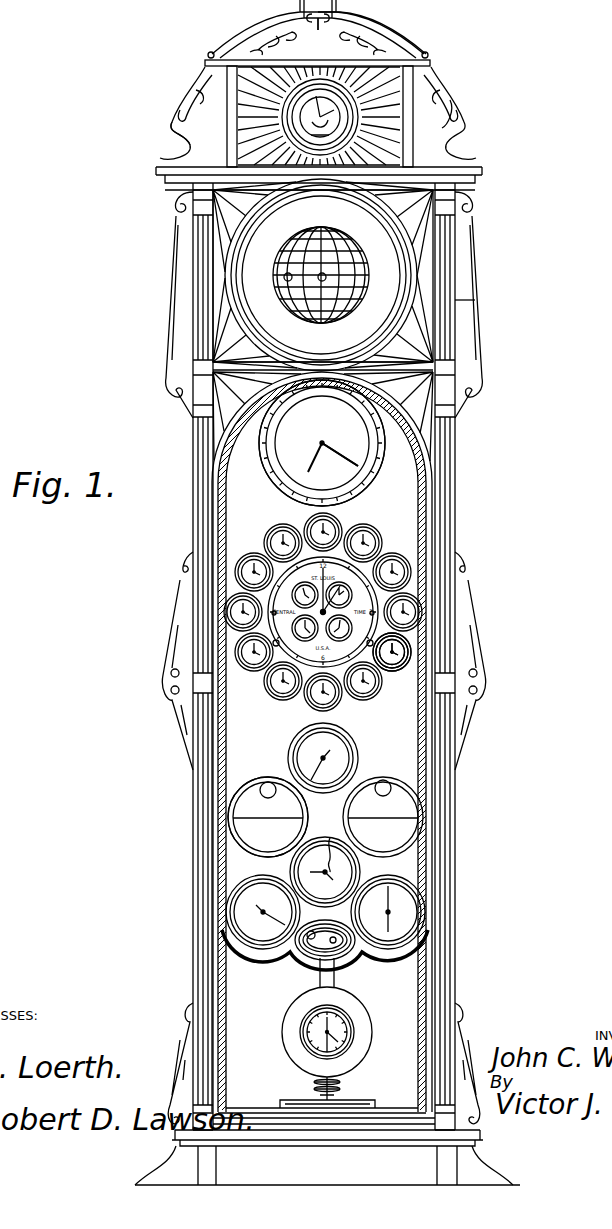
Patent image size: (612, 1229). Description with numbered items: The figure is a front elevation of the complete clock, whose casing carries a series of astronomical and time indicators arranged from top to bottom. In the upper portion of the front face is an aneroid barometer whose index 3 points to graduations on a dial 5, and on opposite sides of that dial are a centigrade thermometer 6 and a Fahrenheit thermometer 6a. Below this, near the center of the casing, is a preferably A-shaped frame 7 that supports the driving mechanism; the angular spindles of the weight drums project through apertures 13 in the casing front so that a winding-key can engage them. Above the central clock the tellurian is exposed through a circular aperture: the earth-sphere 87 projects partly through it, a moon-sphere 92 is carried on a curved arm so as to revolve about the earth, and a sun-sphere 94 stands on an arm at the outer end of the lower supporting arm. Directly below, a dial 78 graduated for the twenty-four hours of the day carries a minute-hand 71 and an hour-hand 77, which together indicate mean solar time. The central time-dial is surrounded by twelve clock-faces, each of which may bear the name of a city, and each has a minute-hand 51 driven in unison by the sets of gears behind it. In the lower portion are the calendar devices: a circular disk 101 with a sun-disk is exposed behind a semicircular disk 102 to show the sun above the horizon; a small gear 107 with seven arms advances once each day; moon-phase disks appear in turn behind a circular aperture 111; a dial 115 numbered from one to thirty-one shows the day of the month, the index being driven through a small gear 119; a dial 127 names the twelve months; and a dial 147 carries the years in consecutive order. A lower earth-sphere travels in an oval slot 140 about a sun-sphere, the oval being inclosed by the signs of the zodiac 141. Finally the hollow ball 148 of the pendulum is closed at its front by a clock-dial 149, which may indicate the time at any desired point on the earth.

The index 3 is at (326, 95).
The dial 5 is at (300, 105).
The centigrade thermometer 6 is at (233, 144).
The Fahrenheit thermometer 6a is at (350, 133).
The A-shaped frame 7 is at (470, 306).
The earth-sphere 87 is at (362, 263).
The moon-sphere 92 is at (284, 278).
The sun-sphere 94 is at (326, 279).
The hour-hand 77 is at (324, 446).
The minute-hand 71 is at (373, 447).
The dial 78 is at (376, 448).
The minute-hand 51 is at (390, 568).
The apertures 13 is at (365, 648).
The circular disk 101 is at (268, 786).
The semicircular disk 102 is at (230, 825).
The small gear 107 is at (322, 765).
The circular aperture 111 is at (386, 785).
The dial 115 is at (352, 868).
The small gear 119 is at (330, 840).
The dial 127 is at (258, 875).
The dial 147 is at (423, 900).
The oval slot 140 is at (316, 930).
The signs of the zodiac 141 is at (311, 948).
The ball 148 is at (355, 1000).
The clock-dial 149 is at (350, 1041).